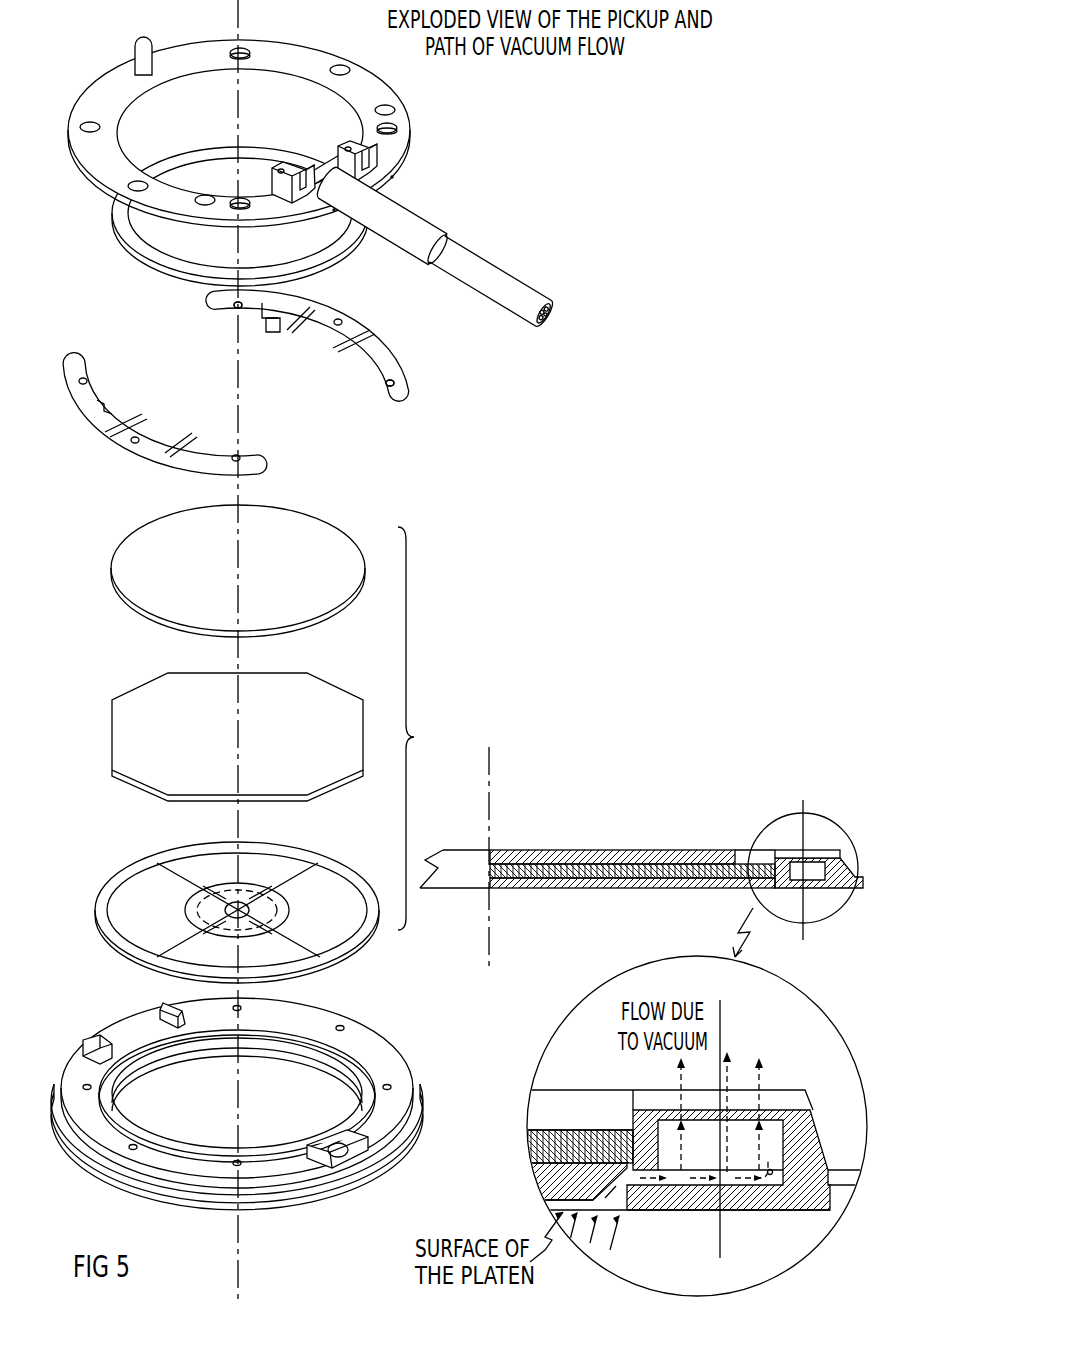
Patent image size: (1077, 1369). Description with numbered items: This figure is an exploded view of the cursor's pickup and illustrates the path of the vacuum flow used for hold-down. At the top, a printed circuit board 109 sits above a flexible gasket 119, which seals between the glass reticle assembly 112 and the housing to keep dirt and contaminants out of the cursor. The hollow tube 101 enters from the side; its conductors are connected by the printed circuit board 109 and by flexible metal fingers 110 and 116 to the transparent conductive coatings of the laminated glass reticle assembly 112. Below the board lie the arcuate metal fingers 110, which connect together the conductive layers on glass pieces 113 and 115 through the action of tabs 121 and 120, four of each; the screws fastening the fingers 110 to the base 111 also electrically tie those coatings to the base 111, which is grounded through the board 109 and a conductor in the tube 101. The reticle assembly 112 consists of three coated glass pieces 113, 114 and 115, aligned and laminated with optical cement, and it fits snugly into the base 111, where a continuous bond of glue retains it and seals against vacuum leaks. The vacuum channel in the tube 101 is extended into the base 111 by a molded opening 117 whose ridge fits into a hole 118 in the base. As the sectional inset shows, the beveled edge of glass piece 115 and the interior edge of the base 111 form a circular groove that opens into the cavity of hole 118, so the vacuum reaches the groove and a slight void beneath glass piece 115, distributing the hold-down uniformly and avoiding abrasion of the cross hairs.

The hollow tube 101 is at (503, 272).
The printed circuit board 109 is at (295, 63).
The flexible metal fingers 110 is at (405, 355).
The base 111 is at (402, 1152).
The laminated glass reticle assembly 112 is at (420, 728).
The glass piece 113 is at (118, 548).
The glass piece 114 is at (112, 735).
The glass piece 115 is at (95, 912).
The flexible metal finger 116 is at (392, 177).
The molded opening 117 is at (334, 210).
The hole 118 is at (336, 1160).
The flexible gasket 119 is at (118, 226).
The tabs 120 is at (330, 340).
The tabs 121 is at (244, 323).